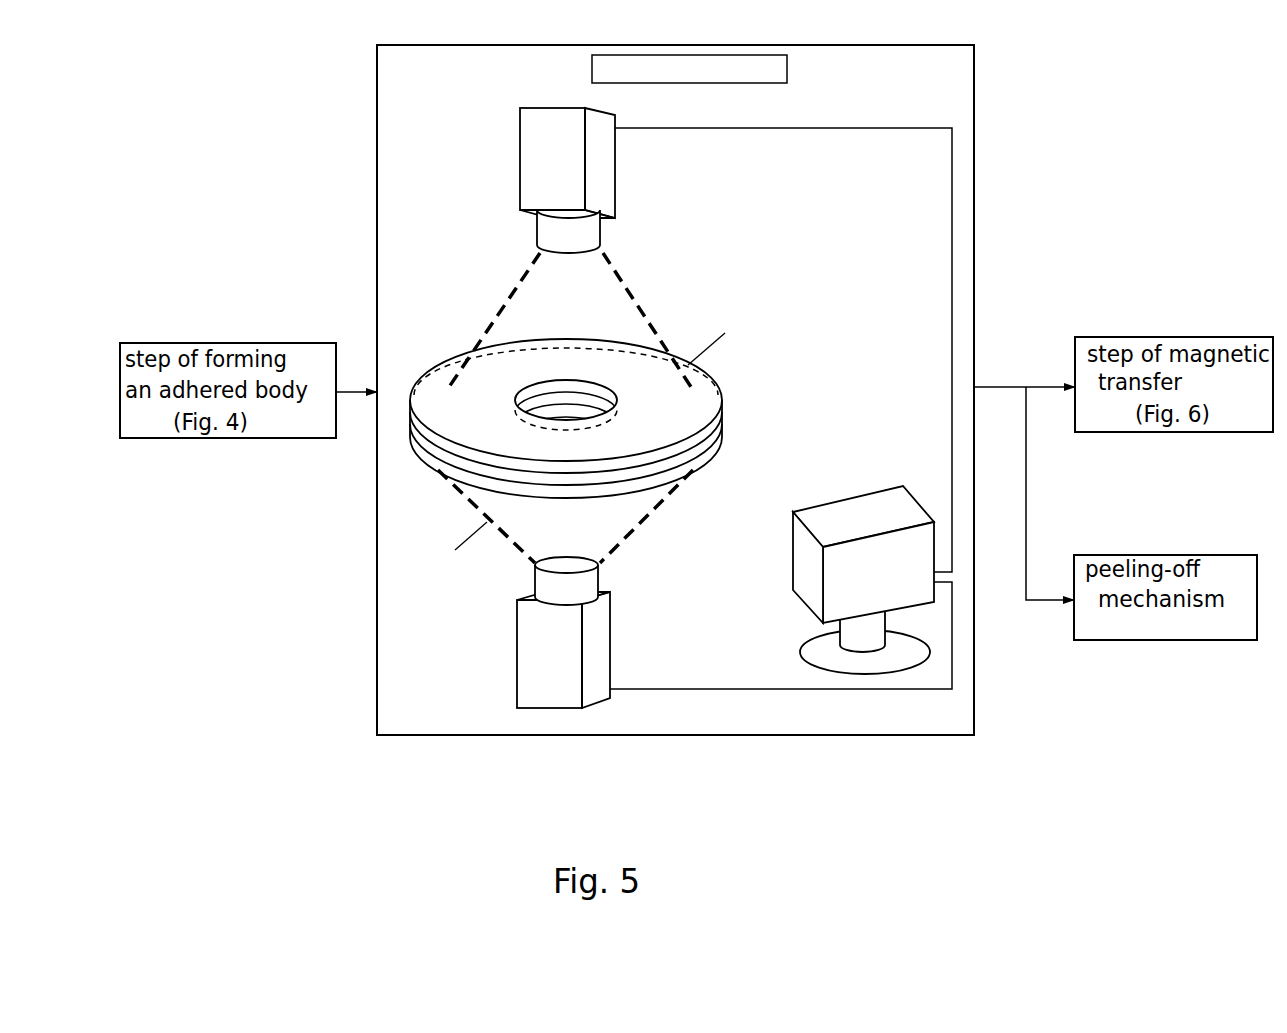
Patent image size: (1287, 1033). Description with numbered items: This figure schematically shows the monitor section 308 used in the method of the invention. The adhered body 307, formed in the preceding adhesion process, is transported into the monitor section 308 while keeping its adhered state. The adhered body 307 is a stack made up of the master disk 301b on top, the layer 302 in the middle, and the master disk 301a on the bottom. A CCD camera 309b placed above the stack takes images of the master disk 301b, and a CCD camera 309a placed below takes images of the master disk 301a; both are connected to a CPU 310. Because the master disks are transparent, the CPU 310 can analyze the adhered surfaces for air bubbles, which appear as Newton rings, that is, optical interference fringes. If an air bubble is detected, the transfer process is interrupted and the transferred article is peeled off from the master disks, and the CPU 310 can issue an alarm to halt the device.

The monitor section 308 is at (963, 120).
The CCD camera 309b is at (528, 175).
The CCD camera 309a is at (530, 663).
The adhered body 307 is at (641, 418).
The master disk 301b is at (713, 378).
The intermediate layer / slave medium 302 is at (718, 420).
The master disk 301a is at (717, 447).
The CPU 310 is at (802, 565).